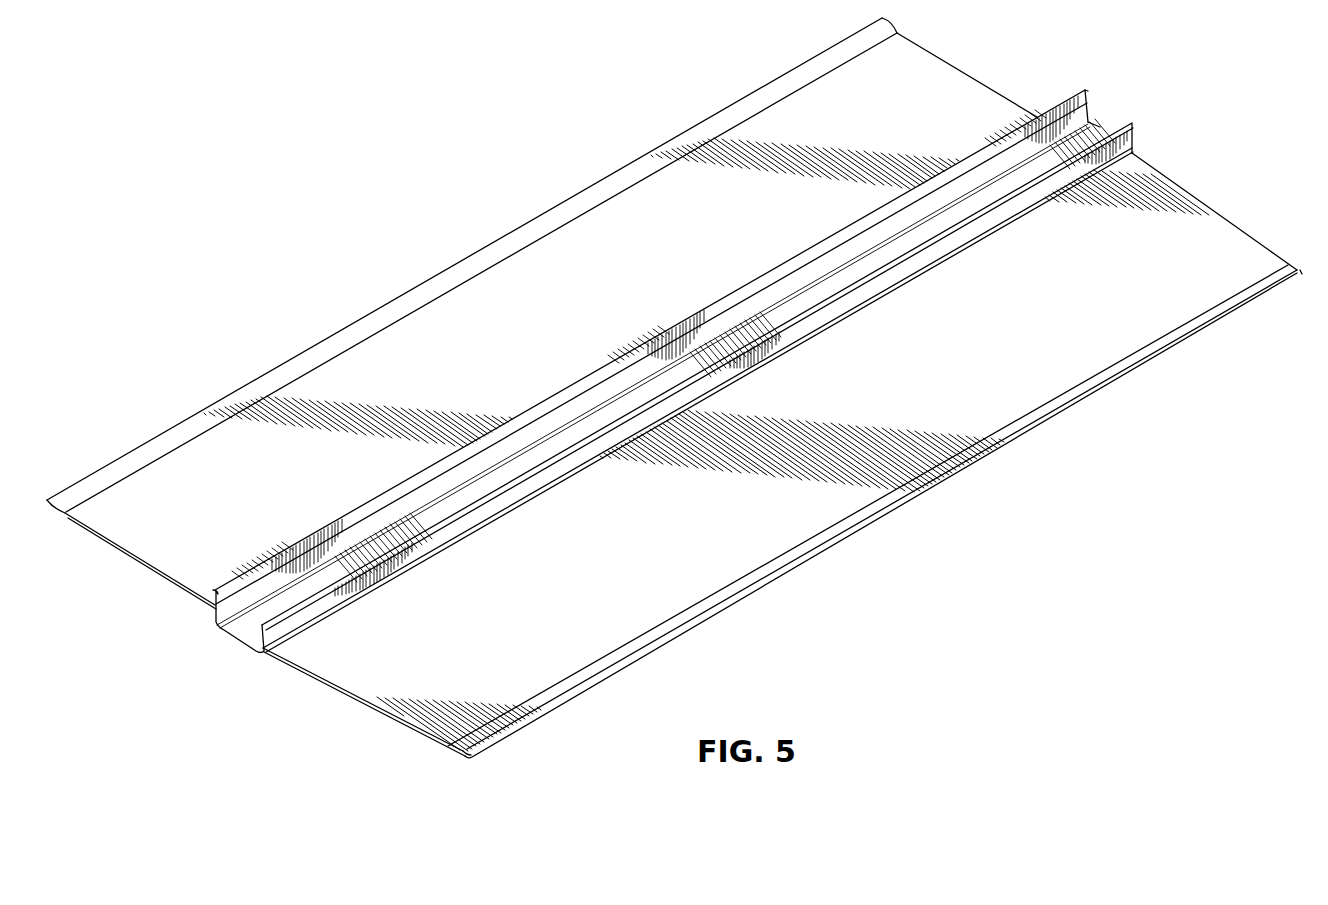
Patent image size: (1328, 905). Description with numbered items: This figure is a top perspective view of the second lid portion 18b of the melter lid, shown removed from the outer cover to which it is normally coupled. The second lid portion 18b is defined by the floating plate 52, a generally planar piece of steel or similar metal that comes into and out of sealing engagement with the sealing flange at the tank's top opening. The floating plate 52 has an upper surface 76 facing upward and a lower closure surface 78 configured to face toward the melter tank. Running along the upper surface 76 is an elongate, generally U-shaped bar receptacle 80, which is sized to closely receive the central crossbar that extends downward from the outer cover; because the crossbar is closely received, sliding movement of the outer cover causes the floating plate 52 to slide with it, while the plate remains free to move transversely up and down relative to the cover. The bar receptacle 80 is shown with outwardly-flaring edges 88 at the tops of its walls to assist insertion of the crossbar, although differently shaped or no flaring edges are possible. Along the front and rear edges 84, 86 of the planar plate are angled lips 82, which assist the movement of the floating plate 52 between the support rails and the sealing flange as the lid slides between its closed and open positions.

The second lid portion 18b is at (440, 152).
The floating plate 52 is at (433, 279).
The upper surface 76 is at (542, 313).
The lower closure surface 78 is at (782, 473).
The bar receptacle 80 is at (679, 347).
The angled lips 82 is at (318, 363).
The front edge 84 is at (450, 748).
The rear edge 86 is at (60, 518).
The outwardly-flaring edges 88 is at (1078, 101).